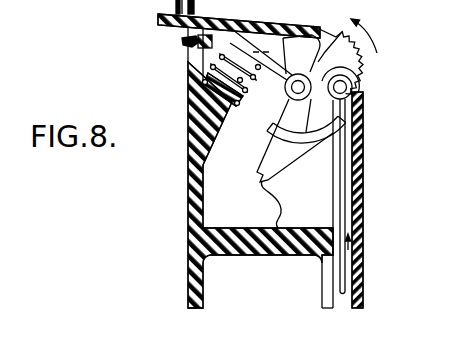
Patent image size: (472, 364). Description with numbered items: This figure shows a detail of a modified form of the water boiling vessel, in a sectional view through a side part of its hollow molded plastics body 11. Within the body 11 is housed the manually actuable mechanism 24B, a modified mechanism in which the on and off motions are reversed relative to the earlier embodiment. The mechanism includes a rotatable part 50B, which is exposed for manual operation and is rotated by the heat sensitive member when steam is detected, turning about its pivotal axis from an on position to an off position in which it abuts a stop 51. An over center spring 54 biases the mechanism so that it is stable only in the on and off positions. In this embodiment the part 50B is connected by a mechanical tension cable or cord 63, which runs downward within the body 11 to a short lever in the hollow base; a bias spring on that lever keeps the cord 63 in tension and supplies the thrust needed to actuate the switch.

The body 11 is at (187, 260).
The manually actuable mechanism 24B is at (229, 161).
The part 50B is at (345, 64).
The stop 51 is at (357, 97).
The over center spring 54 is at (282, 207).
The tension cable 63 is at (345, 191).